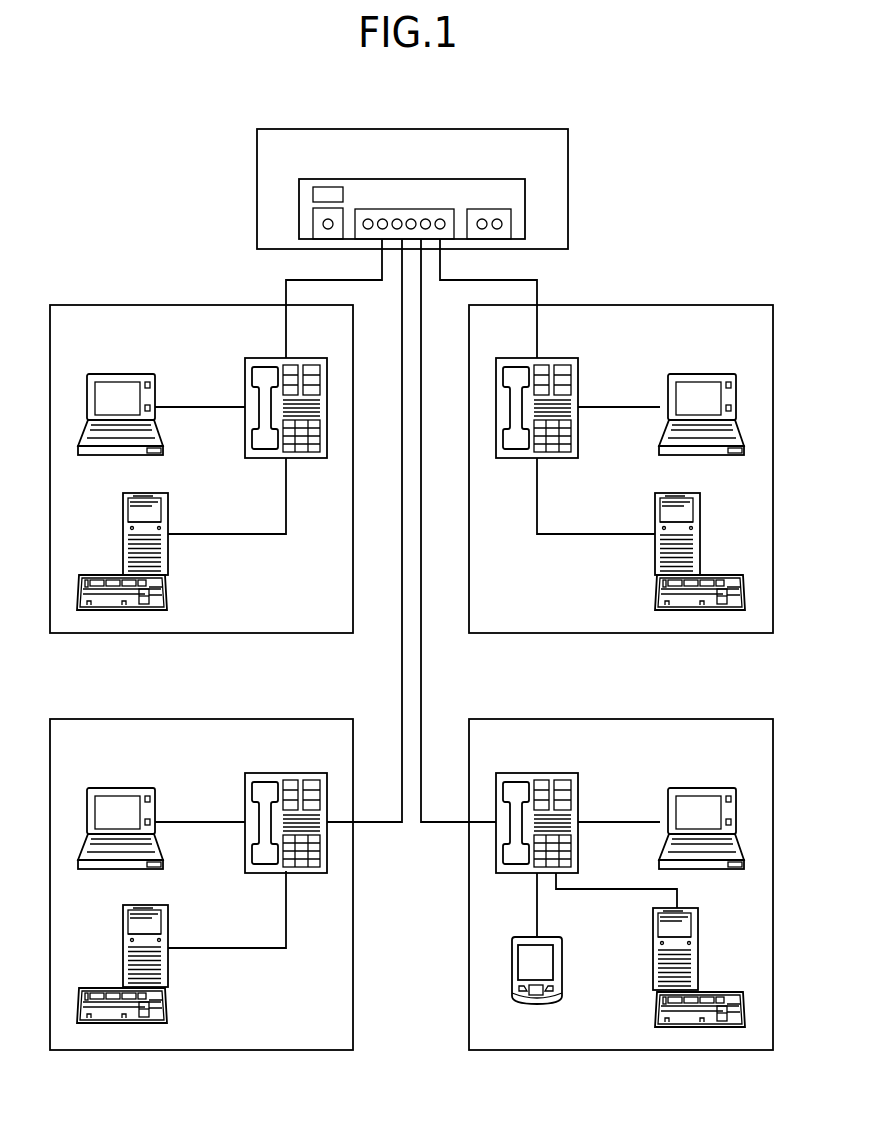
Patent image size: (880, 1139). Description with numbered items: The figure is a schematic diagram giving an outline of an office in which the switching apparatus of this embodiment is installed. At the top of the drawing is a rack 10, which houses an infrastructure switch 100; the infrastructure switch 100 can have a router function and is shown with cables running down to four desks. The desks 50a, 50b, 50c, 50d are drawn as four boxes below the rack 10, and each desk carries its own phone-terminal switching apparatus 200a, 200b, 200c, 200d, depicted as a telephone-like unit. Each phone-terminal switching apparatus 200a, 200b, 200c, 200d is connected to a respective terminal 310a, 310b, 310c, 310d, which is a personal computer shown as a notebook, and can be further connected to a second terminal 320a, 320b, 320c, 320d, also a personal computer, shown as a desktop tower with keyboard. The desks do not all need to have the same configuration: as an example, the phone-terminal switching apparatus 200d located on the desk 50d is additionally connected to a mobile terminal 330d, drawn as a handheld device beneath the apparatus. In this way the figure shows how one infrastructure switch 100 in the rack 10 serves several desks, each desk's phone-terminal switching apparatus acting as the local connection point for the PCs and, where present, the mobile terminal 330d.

The rack 10 is at (498, 129).
The infrastructure switch 100 is at (497, 180).
The desk 50a is at (59, 305).
The desk 50b is at (684, 305).
The desk 50c is at (59, 719).
The desk 50d is at (684, 719).
The phone-terminal switching apparatus 200a is at (276, 358).
The phone-terminal switching apparatus 200b is at (556, 358).
The phone-terminal switching apparatus 200c is at (263, 773).
The phone-terminal switching apparatus 200d is at (556, 773).
The terminal 310a is at (135, 374).
The terminal 310b is at (684, 374).
The terminal 310c is at (135, 788).
The terminal 310d is at (684, 788).
The terminal 320a is at (148, 493).
The terminal 320b is at (683, 493).
The terminal 320c is at (148, 905).
The terminal 320d is at (688, 908).
The mobile terminal 330d is at (551, 937).